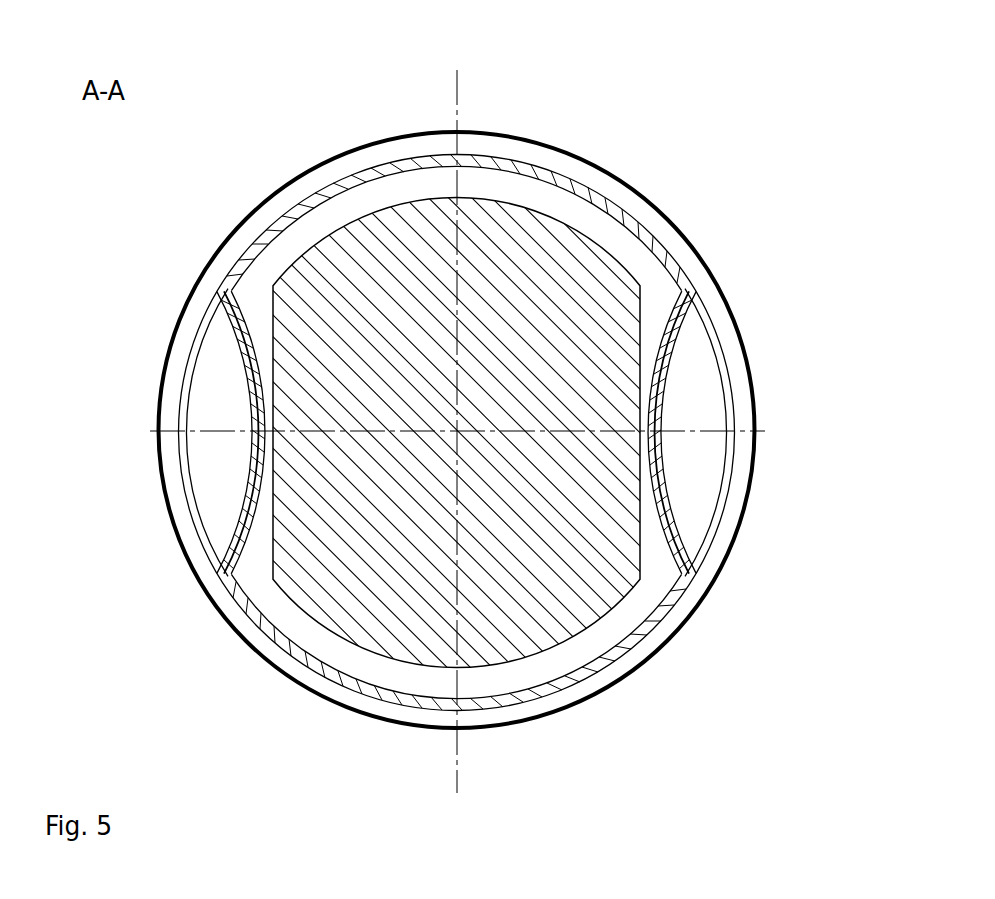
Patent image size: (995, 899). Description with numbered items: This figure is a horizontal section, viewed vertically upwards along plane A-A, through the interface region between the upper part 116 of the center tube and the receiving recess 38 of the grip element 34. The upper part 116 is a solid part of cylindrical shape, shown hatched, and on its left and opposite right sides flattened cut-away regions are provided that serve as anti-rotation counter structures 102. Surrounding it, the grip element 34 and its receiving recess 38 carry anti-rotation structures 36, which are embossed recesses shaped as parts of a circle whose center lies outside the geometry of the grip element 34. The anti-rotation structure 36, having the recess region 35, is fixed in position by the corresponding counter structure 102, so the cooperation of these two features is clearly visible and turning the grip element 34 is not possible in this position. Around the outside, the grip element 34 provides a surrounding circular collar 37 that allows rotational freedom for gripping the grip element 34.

The surrounding circular collar 37 is at (390, 135).
The grip element 34 is at (630, 208).
The receiving recess 38 is at (538, 190).
The upper part of the center tube 116 is at (332, 252).
The recess region 35 is at (217, 403).
The anti-rotation structure 36 is at (663, 413).
The anti-rotation counter structure 102 is at (640, 338).